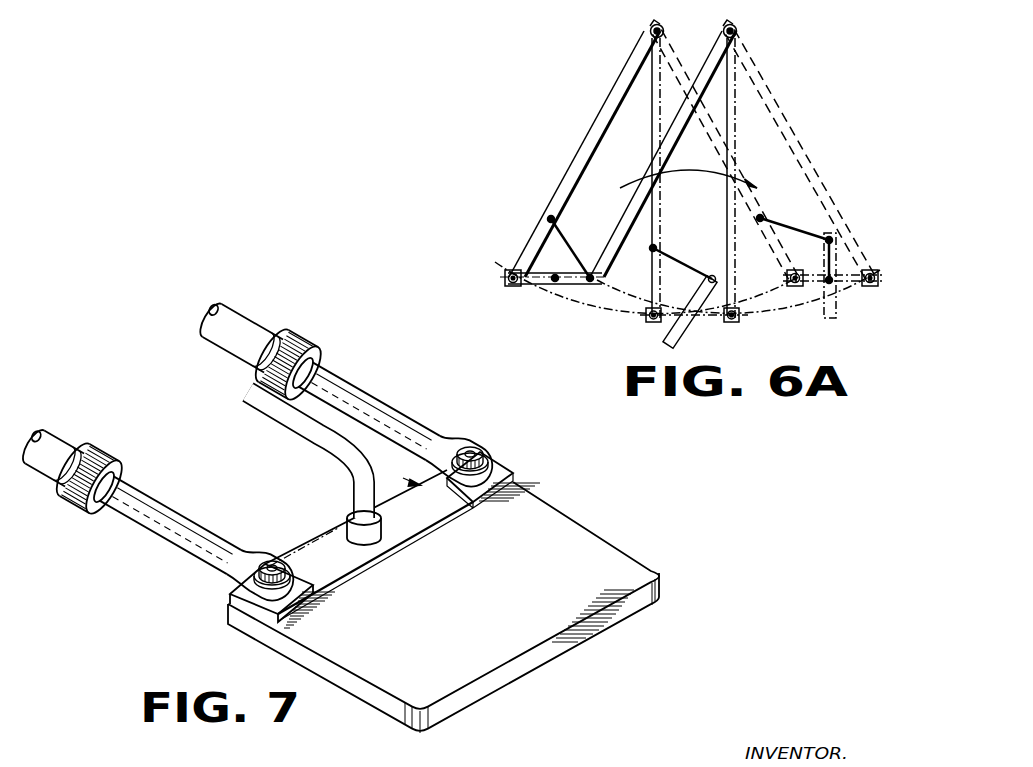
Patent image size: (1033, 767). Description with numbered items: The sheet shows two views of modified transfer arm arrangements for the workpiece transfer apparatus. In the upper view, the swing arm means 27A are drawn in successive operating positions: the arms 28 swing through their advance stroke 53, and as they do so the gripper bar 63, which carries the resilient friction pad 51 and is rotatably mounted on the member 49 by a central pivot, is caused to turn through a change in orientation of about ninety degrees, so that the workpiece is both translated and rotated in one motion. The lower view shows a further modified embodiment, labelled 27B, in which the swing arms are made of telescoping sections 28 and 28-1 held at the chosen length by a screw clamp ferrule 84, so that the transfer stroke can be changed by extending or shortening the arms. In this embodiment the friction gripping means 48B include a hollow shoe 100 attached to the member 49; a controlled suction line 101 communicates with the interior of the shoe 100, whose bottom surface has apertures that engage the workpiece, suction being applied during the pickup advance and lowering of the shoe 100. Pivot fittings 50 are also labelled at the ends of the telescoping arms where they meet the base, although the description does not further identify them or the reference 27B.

In FIG. 6A, the transfer arm means 27A is at (556, 162).
In FIG. 7, the rack frame assembly (second form) 27B is at (279, 282).
In FIG. 6A, the swing arm members 28 is at (629, 204).
In FIG. 7, the swing arm members 28 is at (55, 438).
In FIG. 7, the telescoping section 28-1 is at (172, 510).
In FIG. 7, the friction gripping means 48B is at (622, 507).
In FIG. 7, the member 49 is at (399, 481).
In FIG. 7, the pivot bolt with knurled nut 50 is at (268, 566).
In FIG. 6A, the resilient friction pad 51 is at (507, 0).
In FIG. 6A, the advance stroke 53 is at (710, 203).
In FIG. 6A, the gripper bar 63 is at (682, 343).
In FIG. 7, the screw clamp ferrule 84 is at (110, 462).
In FIG. 7, the hollow shoe 100 is at (630, 560).
In FIG. 7, the controlled suction line 101 is at (313, 433).